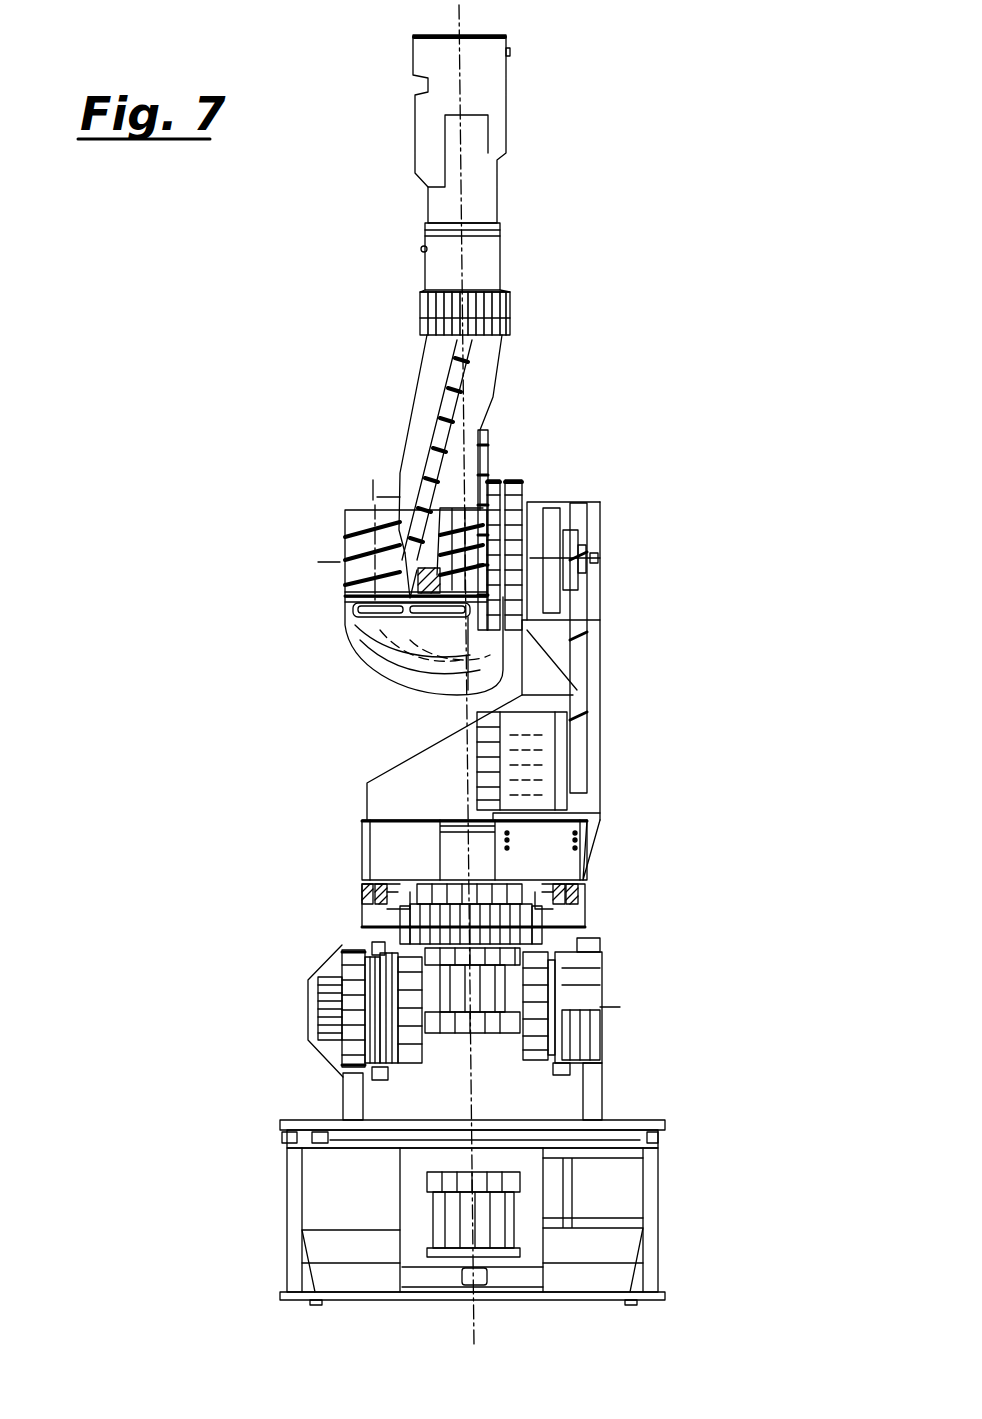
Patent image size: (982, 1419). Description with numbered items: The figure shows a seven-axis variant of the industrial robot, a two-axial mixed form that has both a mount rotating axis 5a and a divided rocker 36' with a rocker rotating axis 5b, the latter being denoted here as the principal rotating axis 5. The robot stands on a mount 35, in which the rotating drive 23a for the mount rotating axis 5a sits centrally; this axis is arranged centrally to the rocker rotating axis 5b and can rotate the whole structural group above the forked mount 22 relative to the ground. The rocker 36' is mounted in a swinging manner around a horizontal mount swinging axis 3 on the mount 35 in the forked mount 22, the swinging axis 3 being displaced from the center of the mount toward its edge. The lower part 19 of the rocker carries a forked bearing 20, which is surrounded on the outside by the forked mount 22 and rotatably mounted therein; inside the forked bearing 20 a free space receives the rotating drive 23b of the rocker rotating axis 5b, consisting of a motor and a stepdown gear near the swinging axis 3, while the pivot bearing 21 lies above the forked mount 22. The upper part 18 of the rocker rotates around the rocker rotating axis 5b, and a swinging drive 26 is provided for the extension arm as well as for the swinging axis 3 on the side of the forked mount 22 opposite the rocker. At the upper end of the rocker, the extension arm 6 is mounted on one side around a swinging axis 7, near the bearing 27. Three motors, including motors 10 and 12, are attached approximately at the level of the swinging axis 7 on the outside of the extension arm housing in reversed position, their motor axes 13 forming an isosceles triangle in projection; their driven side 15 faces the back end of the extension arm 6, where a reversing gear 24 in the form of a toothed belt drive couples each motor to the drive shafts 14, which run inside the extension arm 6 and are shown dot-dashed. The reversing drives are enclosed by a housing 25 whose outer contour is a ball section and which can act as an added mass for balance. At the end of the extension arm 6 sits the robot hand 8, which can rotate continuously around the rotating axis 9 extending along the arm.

The robot hand 8 is at (490, 90).
The rotating axis 9 is at (495, 255).
The extension arm 6 is at (493, 363).
The drive shafts 14 is at (455, 384).
The motor 10 is at (488, 440).
The bearing 27 is at (500, 480).
The swinging axis 7 is at (600, 558).
The divided rocker 36' is at (625, 661).
The motor axes 13 is at (400, 497).
The motor 12 is at (352, 548).
The driven side 15 is at (330, 590).
The housing 25 is at (343, 632).
The reversing gear 24 is at (360, 668).
The principal rotating axis 5 is at (432, 708).
The upper part 18 is at (385, 800).
The swinging drive 26 is at (575, 808).
The rocker rotating axis 5b is at (470, 862).
The pivot bearing 21 is at (580, 895).
The lower part 19 is at (370, 918).
The rotating drive 23b is at (485, 988).
The mount swinging axis 3 is at (297, 1007).
The forked bearing 20 is at (605, 1042).
The forked mount 22 is at (593, 1082).
The mount rotating axis 5a is at (472, 1115).
The mount 35 is at (300, 1195).
The rotating drive 23a is at (483, 1222).